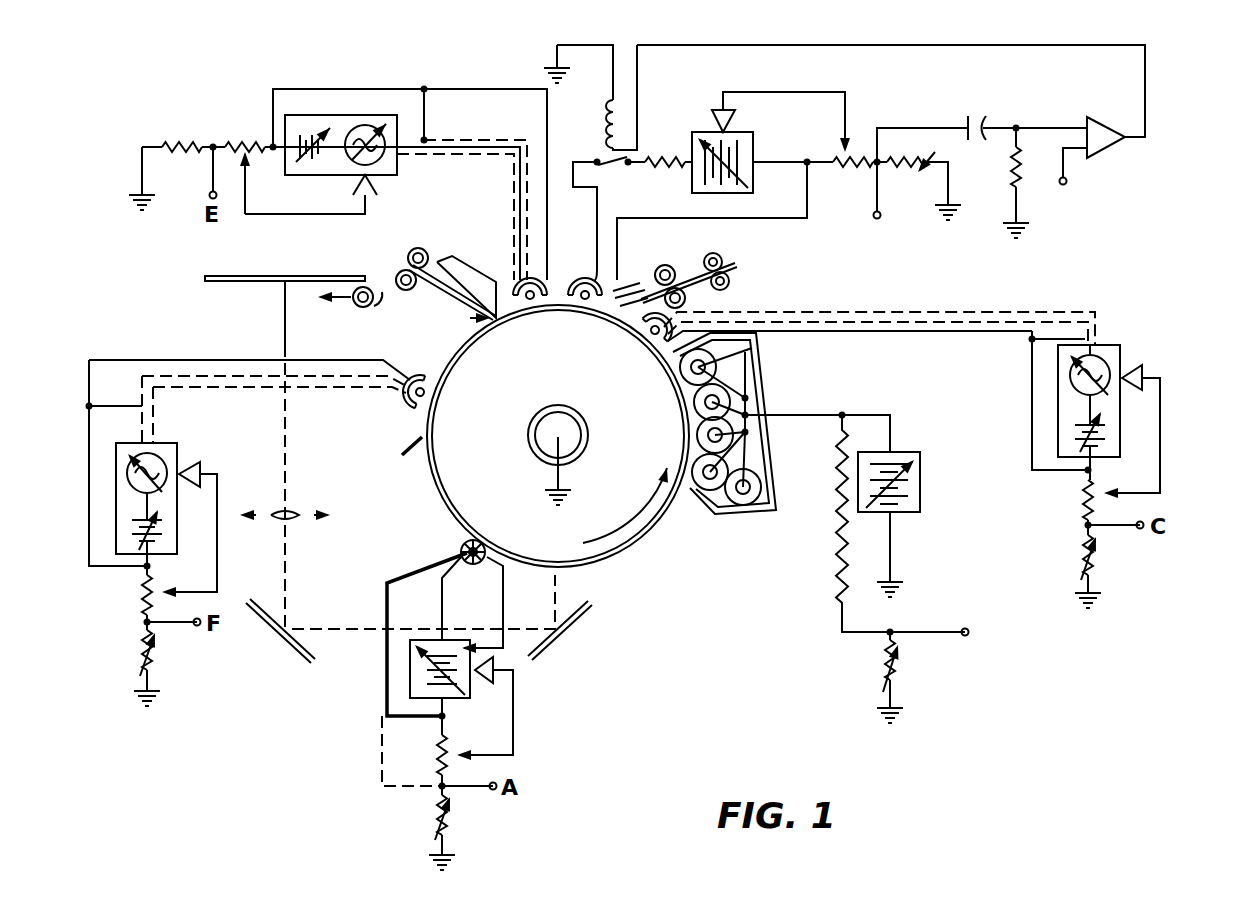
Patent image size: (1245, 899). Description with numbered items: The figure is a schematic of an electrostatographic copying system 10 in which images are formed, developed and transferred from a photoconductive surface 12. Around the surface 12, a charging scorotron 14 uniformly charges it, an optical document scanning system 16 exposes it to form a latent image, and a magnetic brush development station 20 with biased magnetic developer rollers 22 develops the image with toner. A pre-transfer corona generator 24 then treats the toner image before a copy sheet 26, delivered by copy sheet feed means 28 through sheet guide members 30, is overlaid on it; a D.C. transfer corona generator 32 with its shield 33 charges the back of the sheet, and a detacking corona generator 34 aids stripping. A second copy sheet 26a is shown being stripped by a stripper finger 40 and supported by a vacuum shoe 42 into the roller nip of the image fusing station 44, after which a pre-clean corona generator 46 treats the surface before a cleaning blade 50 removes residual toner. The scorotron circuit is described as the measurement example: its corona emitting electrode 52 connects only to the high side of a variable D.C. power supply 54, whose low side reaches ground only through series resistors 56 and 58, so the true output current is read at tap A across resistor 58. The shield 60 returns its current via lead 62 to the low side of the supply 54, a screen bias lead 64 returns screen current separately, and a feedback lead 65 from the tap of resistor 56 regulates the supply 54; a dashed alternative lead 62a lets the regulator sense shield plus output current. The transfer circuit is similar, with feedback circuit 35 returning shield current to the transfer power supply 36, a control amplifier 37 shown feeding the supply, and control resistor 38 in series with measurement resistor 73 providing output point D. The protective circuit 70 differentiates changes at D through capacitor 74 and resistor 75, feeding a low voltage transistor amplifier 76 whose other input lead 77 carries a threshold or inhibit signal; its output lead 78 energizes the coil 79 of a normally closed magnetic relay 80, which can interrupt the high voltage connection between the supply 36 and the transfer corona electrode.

The electrostatographic copying system 10 is at (733, 296).
The photoconductive surface 12 is at (660, 528).
The charging scorotron 14 is at (458, 546).
The optical document scanning system 16 is at (280, 338).
The magnetic brush development station 20 is at (773, 453).
The magnetic developer rollers 22 is at (767, 360).
The pre-transfer corona generator 24 is at (634, 332).
The copy sheet 26 is at (708, 256).
The second copy sheet 26a is at (423, 284).
The copy sheet feed means 28 is at (662, 265).
The sheet guide members 30 is at (630, 285).
The transfer corona generator 32 is at (571, 283).
The shield 33 is at (584, 284).
The detacking corona generator 34 is at (514, 288).
The feedback circuit 35 is at (639, 216).
The transfer power supply 36 is at (700, 128).
The control amplifier 37 is at (778, 91).
The power supply control resistor 38 is at (847, 172).
The stripper finger 40 is at (466, 320).
The vacuum shoe 42 is at (455, 262).
The image fusing station 44 is at (392, 262).
The pre-clean corona generator 46 is at (410, 406).
The cleaning blade 50 is at (404, 460).
The corona emitting electrode 52 is at (481, 563).
The variable D.C. power supply 54 is at (477, 694).
The feedback control resistor 56 is at (436, 750).
The measurement resistor 58 is at (434, 813).
The shield 60 is at (444, 565).
The shield current feedback lead 62 is at (385, 608).
The alternative shield current feedback lead 62a is at (381, 738).
The screen bias lead 64 is at (506, 586).
The feedback lead 65 is at (530, 701).
The protective circuit 70 is at (957, 38).
The measurement resistor 73 is at (913, 198).
The capacitor 74 is at (985, 120).
The resistor 75 is at (1004, 162).
The low voltage transistor amplifier 76 is at (1120, 142).
The amplifier input lead 77 is at (1068, 181).
The output lead 78 is at (1147, 97).
The relay coil 79 is at (609, 122).
The magnetic relay 80 is at (606, 168).